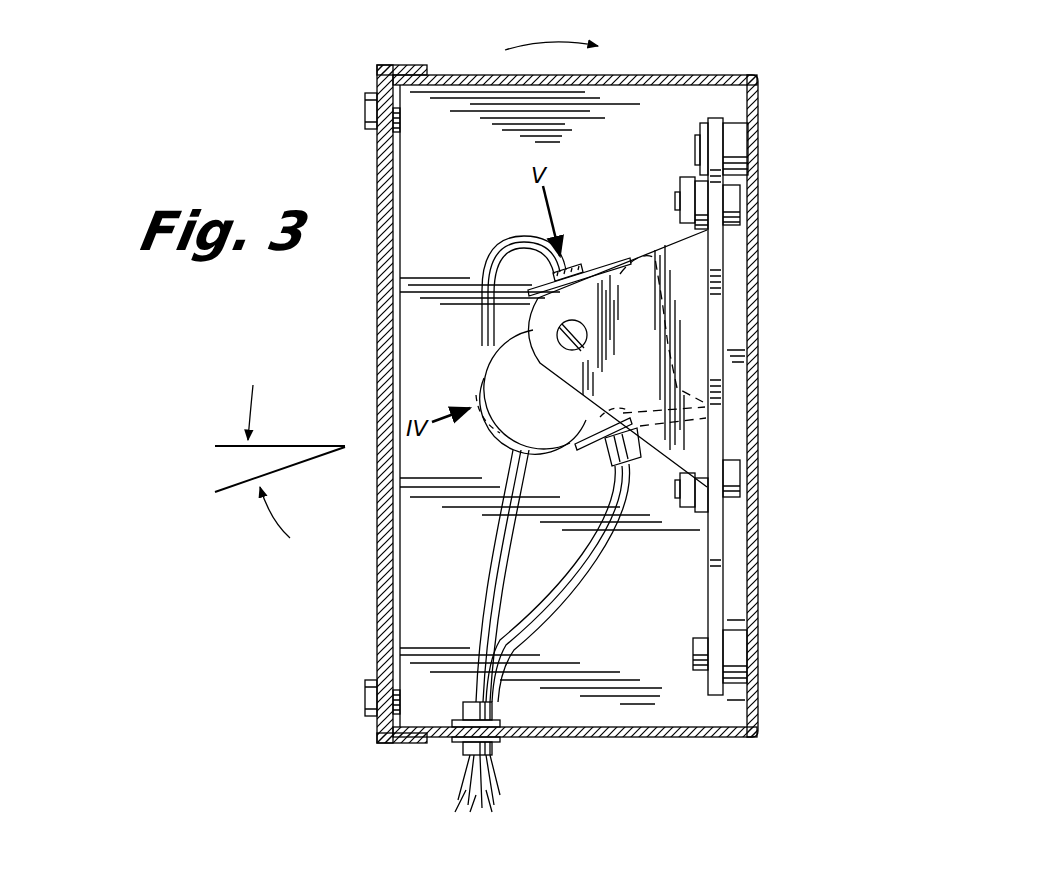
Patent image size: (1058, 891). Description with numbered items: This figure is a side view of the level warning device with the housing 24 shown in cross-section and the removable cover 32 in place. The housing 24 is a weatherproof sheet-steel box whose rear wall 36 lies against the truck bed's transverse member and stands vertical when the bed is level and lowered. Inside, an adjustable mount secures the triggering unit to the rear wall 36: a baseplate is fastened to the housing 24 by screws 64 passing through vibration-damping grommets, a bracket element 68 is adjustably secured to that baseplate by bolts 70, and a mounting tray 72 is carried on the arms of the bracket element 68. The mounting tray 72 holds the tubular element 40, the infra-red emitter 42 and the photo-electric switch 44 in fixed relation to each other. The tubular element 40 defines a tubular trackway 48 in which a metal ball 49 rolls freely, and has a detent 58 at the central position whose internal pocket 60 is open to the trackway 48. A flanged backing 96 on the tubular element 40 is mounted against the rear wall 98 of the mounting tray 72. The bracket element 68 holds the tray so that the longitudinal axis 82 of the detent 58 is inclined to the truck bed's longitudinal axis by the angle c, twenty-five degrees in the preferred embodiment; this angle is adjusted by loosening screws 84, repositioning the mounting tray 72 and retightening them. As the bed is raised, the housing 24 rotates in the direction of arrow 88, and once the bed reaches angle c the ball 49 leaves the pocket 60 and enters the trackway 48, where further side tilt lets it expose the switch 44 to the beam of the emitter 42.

The housing 24 is at (633, 76).
The removable cover 32 is at (377, 262).
The rear wall 36 is at (758, 197).
The tubular element 40 is at (700, 399).
The emitter 42 is at (617, 450).
The photo-electric switch 44 is at (575, 263).
The tubular trackway 48 is at (648, 432).
The metal ball 49 is at (470, 383).
The detent 58 is at (503, 447).
The pocket 60 is at (478, 444).
The screws 64 is at (693, 670).
The bracket element 68 is at (623, 283).
The bolts 70 is at (678, 192).
The mounting tray 72 is at (590, 268).
The longitudinal axis of the detent 82 is at (287, 470).
The screws 84 is at (557, 337).
The arrow 88 is at (540, 42).
The flanged backing 96 is at (683, 345).
The rear wall of the mounting tray 98 is at (677, 295).